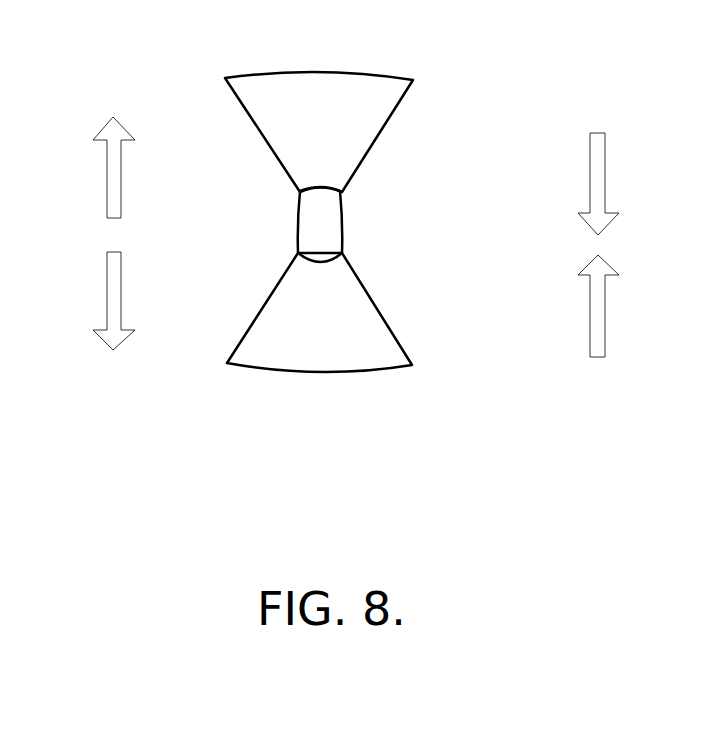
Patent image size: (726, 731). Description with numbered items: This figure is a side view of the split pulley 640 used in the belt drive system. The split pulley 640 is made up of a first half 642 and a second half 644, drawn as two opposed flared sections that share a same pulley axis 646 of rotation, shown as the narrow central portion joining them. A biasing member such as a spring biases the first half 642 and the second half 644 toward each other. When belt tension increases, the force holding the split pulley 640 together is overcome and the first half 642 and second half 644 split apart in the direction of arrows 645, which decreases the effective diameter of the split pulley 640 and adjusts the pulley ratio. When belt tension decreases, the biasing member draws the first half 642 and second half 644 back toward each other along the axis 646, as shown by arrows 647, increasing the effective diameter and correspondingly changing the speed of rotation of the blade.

The split pulley 640 is at (310, 191).
The first half 642 is at (378, 85).
The second half 644 is at (270, 323).
The pulley axis 646 is at (307, 227).
The arrows 645 is at (108, 265).
The arrows 647 is at (582, 273).